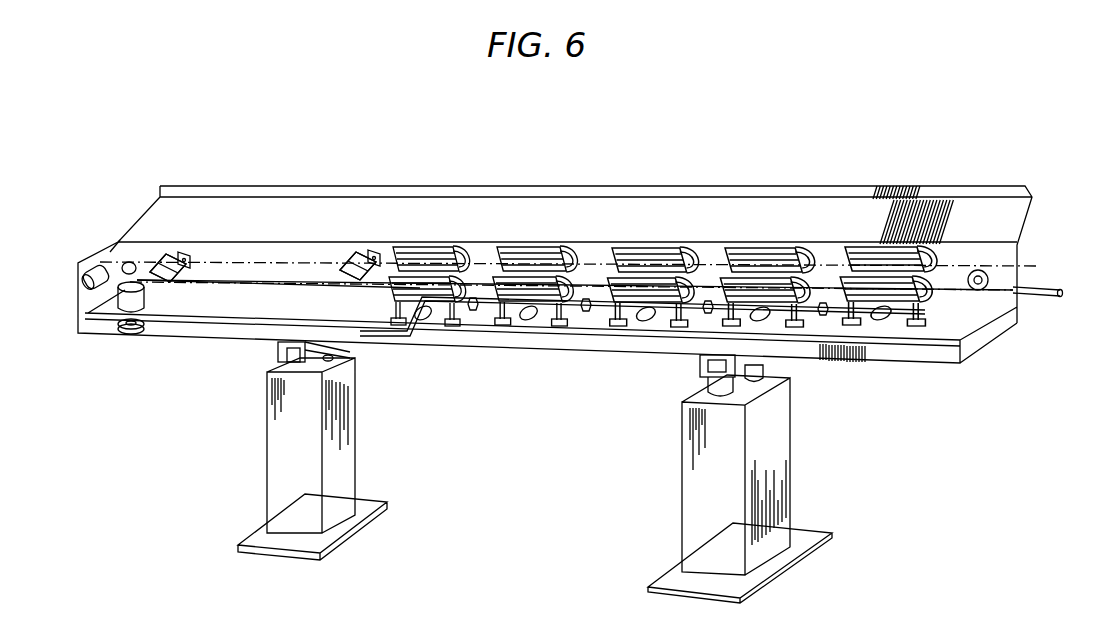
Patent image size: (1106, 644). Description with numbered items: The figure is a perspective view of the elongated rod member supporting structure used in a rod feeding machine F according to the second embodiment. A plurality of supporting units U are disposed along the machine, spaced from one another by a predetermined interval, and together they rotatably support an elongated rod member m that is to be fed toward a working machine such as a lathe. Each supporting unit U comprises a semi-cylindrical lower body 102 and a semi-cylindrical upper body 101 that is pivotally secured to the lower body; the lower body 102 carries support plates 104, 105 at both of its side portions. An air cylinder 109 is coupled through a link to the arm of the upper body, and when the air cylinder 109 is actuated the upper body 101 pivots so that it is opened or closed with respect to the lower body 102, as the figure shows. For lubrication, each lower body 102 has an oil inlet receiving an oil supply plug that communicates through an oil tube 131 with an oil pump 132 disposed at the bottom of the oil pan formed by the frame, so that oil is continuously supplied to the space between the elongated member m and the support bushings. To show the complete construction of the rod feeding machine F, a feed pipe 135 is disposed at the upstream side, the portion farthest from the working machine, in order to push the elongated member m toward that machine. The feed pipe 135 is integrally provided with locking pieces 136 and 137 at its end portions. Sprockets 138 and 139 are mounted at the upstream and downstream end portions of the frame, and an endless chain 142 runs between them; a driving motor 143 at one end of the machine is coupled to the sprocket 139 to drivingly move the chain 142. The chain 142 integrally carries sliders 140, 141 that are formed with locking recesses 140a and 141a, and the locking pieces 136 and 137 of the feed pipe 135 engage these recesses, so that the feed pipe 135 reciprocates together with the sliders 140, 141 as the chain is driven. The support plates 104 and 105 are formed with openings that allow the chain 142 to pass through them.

The rod feeding machine F is at (561, 182).
The elongated rod member m is at (1040, 297).
The supporting unit U is at (435, 241).
The upper body 101 is at (413, 252).
The lower body 102 is at (422, 332).
The support plate 104 is at (515, 318).
The support plate 105 is at (575, 318).
The air cylinder 109 is at (637, 325).
The oil tube 131 is at (468, 322).
The oil pump 132 is at (120, 300).
The feed pipe 135 is at (253, 277).
The locking piece 136 is at (357, 260).
The locking piece 137 is at (163, 257).
The sprocket 138 is at (988, 276).
The sprocket 139 is at (125, 267).
The slider 140 is at (347, 257).
The locking recess 140a is at (378, 257).
The slider 141 is at (185, 260).
The locking recess 141a is at (183, 257).
The endless chain 142 is at (138, 250).
The driving motor 143 is at (98, 272).